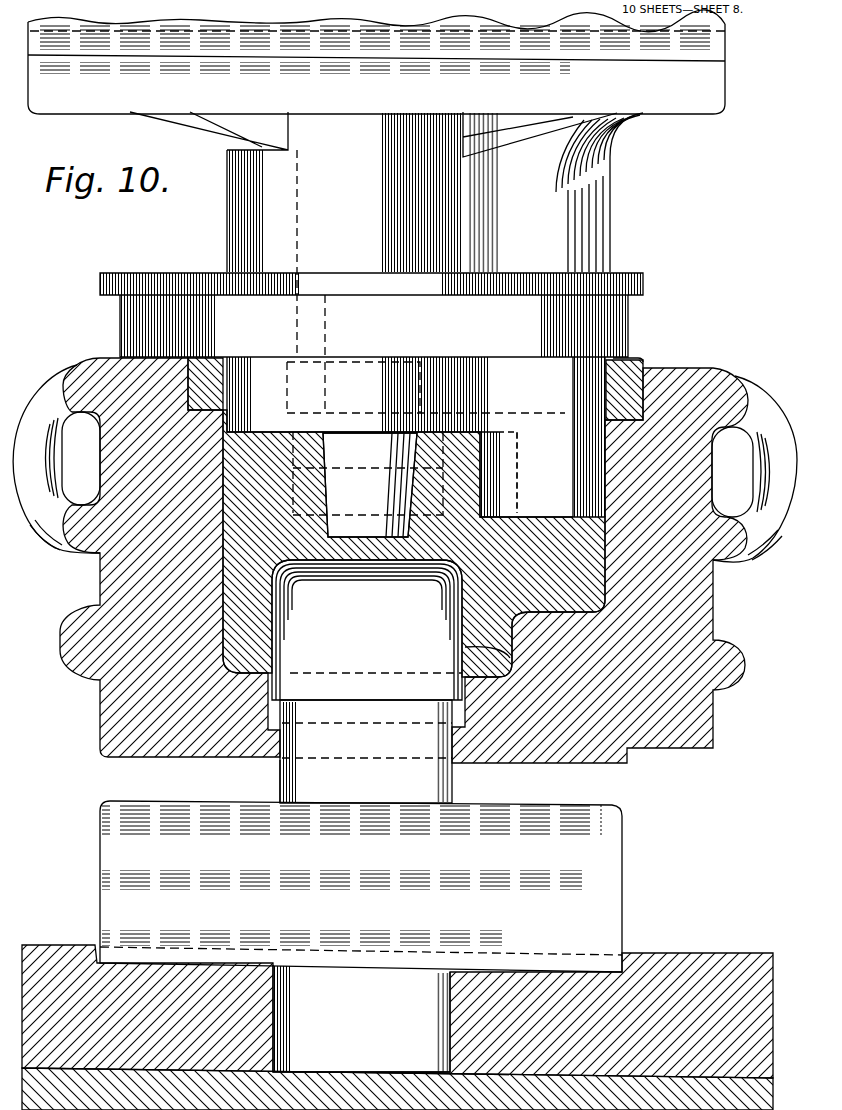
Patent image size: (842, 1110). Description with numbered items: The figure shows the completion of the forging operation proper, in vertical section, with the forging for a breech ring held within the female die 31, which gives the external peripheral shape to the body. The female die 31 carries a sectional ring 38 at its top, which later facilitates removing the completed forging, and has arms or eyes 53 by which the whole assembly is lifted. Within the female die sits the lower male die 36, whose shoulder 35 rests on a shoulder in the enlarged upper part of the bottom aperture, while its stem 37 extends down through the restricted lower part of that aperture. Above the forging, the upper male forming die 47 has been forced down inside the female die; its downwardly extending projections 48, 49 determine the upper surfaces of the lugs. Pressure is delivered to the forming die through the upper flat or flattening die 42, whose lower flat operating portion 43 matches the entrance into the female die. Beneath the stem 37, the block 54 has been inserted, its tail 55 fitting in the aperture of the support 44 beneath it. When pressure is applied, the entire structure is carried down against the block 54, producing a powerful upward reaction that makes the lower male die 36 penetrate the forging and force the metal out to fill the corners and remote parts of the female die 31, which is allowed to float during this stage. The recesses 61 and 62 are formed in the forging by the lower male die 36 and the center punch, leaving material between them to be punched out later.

The female die 31 is at (137, 383).
The shoulder 35 is at (366, 700).
The lower male die 36 is at (367, 630).
The stem 37 is at (302, 779).
The sectional ring 38 is at (627, 388).
The upper flat or flattening die 42 is at (700, 100).
The lower flat operating portion 43 is at (585, 213).
The base 44 is at (708, 985).
The upper male forming die 47 is at (133, 303).
The downwardly extending projection 48 is at (533, 493).
The downwardly extending projection 49 is at (320, 428).
The arms or eyes 53 is at (55, 530).
The block 54 is at (602, 889).
The tail 55 is at (361, 1018).
The recess 61 is at (413, 488).
The recess 62 is at (510, 658).